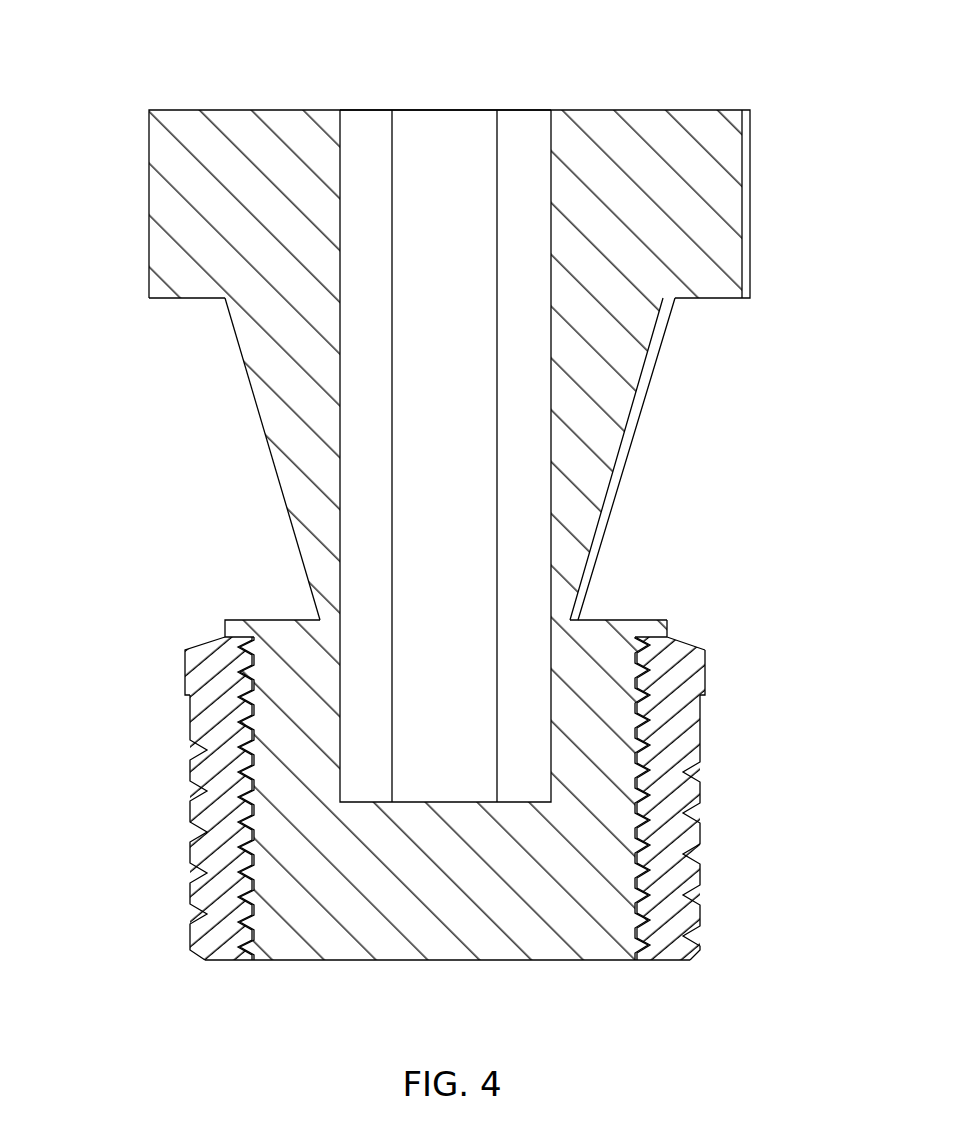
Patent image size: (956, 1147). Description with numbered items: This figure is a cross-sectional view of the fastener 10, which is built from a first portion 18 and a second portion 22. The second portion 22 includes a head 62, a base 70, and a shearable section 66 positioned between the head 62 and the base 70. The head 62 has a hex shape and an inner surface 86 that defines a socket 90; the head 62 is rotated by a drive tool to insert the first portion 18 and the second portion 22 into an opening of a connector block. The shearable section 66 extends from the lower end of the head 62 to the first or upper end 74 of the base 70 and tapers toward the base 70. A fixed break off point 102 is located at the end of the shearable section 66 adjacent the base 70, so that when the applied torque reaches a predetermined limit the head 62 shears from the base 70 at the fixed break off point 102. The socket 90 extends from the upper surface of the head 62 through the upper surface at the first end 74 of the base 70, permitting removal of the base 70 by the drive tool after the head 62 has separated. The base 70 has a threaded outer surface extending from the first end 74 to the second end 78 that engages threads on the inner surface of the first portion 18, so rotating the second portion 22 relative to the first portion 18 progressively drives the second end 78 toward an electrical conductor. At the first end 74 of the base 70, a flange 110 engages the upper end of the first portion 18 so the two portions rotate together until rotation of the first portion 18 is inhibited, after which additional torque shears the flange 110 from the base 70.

The fastener 10 is at (119, 45).
The first portion 18 is at (686, 832).
The second portion 22 is at (283, 441).
The head 62 is at (750, 205).
The shearable section 66 is at (620, 478).
The base 70 is at (277, 875).
The first end 74 is at (628, 620).
The second end 78 is at (446, 960).
The inner surface 86 is at (423, 135).
The socket 90 is at (522, 124).
The fixed break off point 102 is at (318, 616).
The flange 110 is at (667, 623).